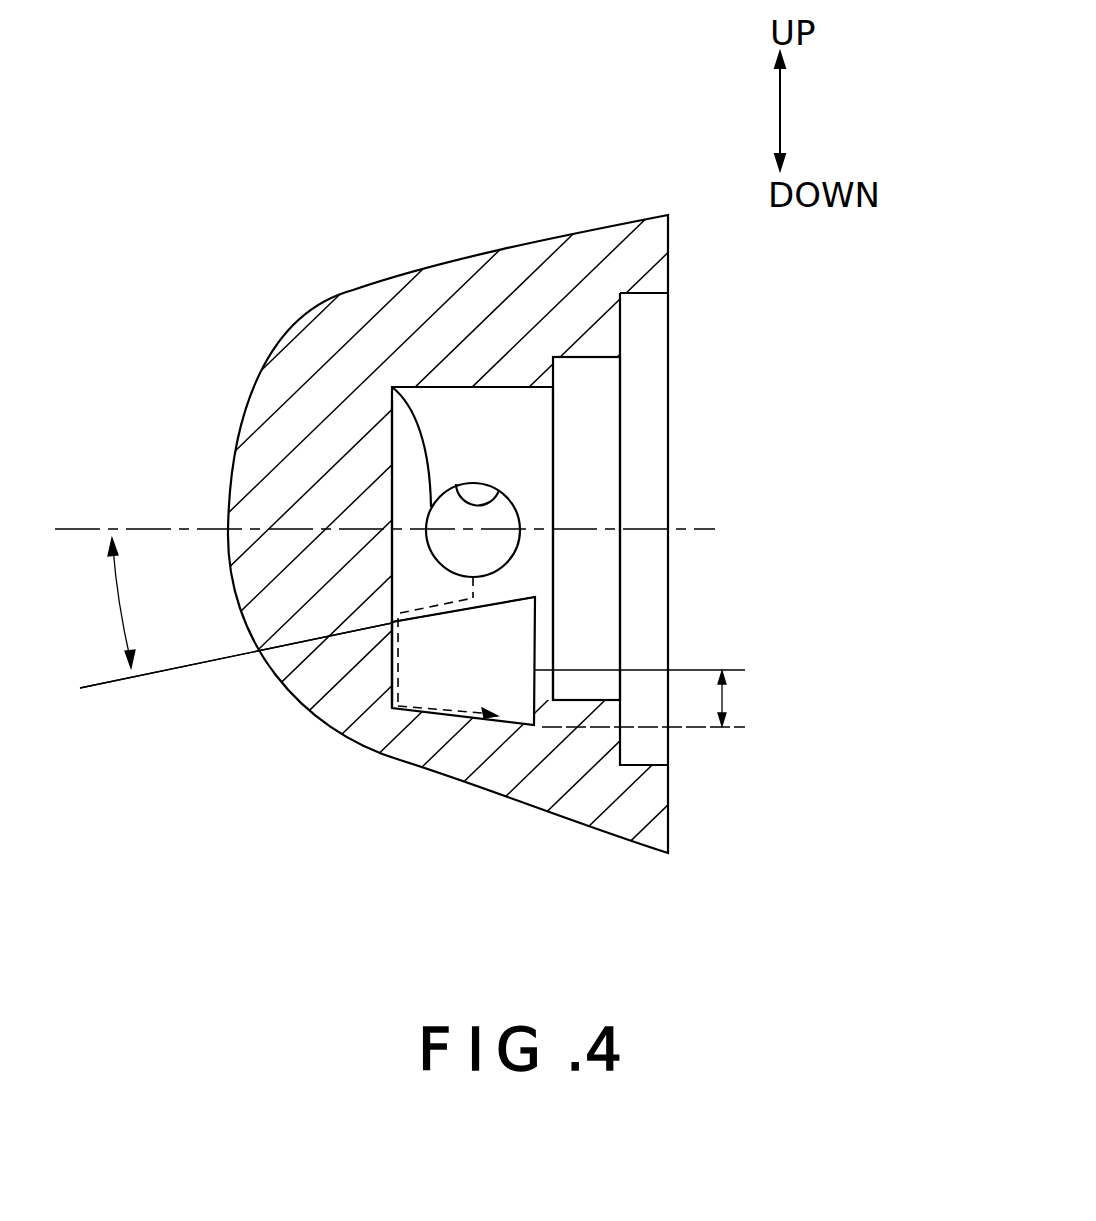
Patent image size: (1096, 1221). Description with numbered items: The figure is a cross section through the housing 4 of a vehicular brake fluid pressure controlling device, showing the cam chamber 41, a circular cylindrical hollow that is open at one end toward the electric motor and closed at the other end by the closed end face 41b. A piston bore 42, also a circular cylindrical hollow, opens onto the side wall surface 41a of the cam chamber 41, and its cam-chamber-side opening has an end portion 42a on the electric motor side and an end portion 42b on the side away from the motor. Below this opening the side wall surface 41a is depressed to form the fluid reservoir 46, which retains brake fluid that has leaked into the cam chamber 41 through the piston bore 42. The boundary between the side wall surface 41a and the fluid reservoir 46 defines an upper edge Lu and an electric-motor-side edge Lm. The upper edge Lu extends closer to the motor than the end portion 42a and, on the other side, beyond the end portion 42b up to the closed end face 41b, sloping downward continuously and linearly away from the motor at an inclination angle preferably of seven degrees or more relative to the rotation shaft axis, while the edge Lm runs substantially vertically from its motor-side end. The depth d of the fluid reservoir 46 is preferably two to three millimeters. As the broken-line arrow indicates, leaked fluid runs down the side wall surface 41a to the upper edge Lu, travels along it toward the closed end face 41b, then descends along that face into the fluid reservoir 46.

The housing 4 is at (438, 258).
The cam chamber 41 is at (708, 522).
The side wall surface 41a is at (538, 416).
The closed end face 41b is at (393, 440).
The piston bore 42 is at (500, 492).
The end portion on the electric motor side 42a is at (522, 527).
The end portion on the side away from the electric motor 42b is at (392, 387).
The fluid reservoir 46 is at (515, 690).
The upper edge Lu is at (507, 598).
The electric-motor-side edge Lm is at (535, 632).
The depth d is at (738, 698).